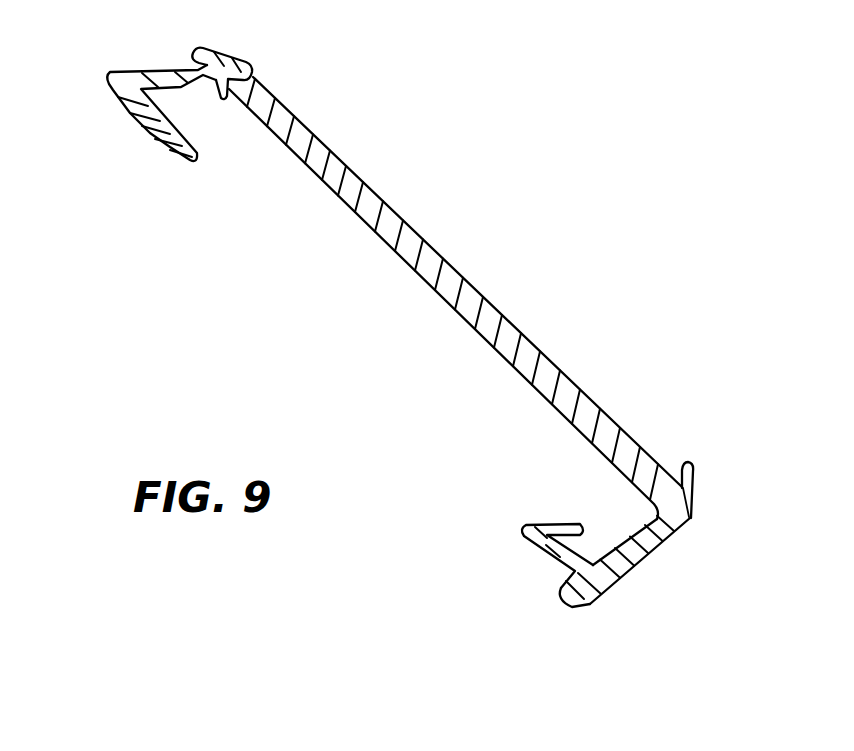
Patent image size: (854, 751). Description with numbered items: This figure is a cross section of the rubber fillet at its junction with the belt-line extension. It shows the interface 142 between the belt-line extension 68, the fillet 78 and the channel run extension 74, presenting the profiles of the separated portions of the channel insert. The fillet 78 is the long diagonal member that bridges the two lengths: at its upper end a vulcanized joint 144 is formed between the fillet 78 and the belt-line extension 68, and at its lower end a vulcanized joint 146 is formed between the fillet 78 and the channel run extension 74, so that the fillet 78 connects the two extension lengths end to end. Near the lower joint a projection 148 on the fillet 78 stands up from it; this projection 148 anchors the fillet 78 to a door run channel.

The interface 142 is at (442, 322).
The fillet 78 is at (418, 230).
The vulcanized joint 144 is at (256, 81).
The belt-line extension 68 is at (120, 71).
The projection 148 is at (693, 473).
The vulcanized joint 146 is at (692, 515).
The channel run extension 74 is at (637, 563).